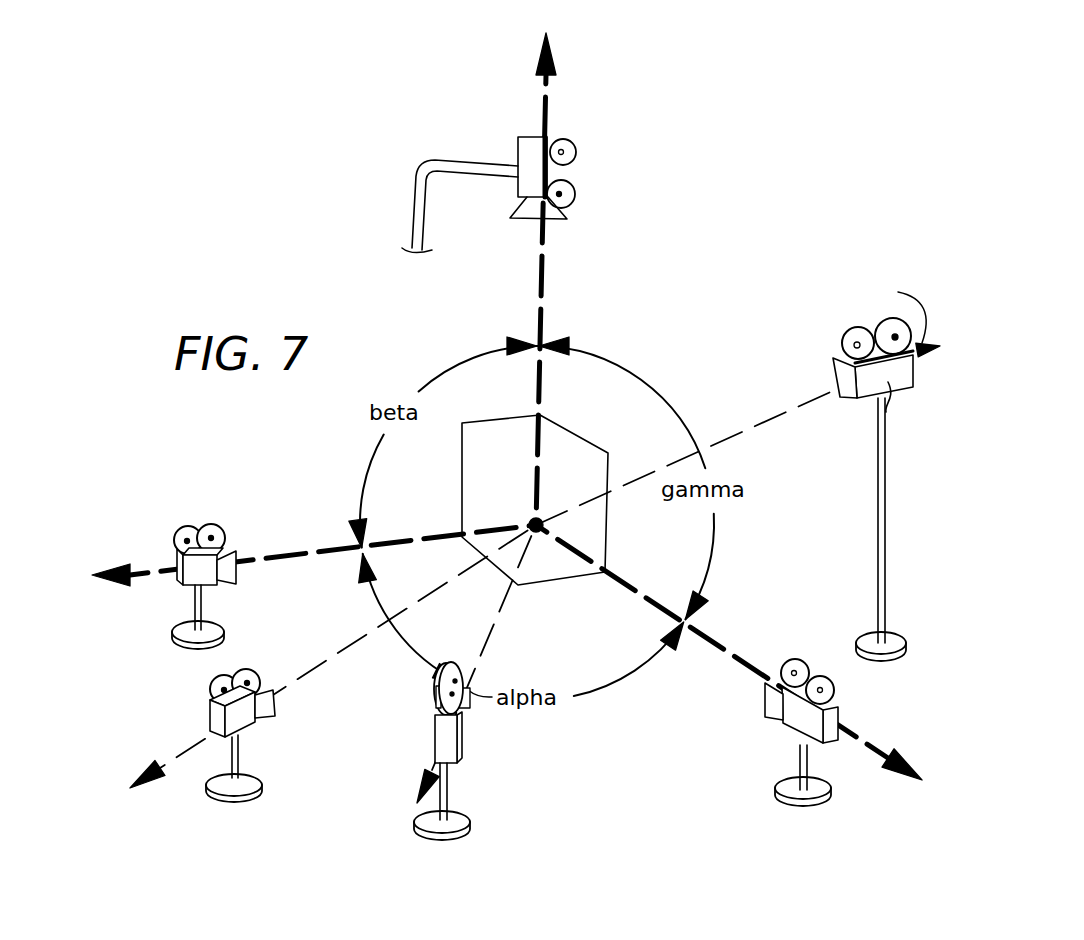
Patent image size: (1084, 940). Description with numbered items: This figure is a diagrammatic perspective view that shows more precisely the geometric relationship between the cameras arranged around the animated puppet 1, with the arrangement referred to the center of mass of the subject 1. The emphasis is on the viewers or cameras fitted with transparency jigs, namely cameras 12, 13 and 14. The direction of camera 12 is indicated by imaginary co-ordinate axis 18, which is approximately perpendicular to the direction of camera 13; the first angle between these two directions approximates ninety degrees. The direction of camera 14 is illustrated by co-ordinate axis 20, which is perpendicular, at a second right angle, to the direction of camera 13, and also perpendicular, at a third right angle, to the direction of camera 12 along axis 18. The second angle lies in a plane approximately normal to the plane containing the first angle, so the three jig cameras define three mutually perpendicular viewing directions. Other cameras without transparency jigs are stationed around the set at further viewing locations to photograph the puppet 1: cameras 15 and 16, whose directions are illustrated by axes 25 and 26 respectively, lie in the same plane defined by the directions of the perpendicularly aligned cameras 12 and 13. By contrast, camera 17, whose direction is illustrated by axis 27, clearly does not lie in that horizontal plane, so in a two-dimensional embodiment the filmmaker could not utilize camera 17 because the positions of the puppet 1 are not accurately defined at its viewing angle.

The puppet 1 is at (541, 513).
The camera 12 is at (840, 688).
The camera 13 is at (207, 520).
The camera 14 is at (577, 185).
The camera 15 is at (238, 672).
The camera 16 is at (463, 727).
The camera 17 is at (857, 325).
The co-ordinate axis 18 is at (885, 758).
The co-ordinate axis 20 is at (545, 115).
The axis 25 is at (188, 748).
The axis 26 is at (432, 772).
The axis 27 is at (902, 317).